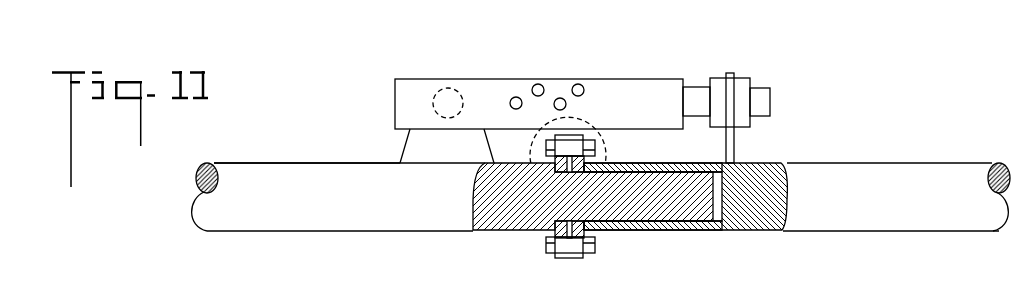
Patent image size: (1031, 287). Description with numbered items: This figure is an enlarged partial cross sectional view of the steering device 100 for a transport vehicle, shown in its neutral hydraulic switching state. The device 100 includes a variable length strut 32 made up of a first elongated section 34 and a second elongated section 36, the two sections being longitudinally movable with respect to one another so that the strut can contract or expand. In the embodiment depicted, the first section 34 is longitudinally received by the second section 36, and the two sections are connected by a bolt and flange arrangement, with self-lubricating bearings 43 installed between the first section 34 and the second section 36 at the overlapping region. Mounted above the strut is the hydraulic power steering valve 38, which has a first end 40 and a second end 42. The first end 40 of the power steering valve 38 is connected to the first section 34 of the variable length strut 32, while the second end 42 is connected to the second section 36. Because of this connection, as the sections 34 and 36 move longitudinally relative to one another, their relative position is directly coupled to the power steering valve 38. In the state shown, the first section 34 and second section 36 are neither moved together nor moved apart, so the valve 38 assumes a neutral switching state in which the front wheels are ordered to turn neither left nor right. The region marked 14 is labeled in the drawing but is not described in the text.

The coupling sleeve 14 is at (589, 118).
The variable length strut 32 is at (356, 151).
The first elongated section 34 is at (360, 207).
The second elongated section 36 is at (843, 210).
The hydraulic power steering valve 38 is at (501, 71).
The first end 40 is at (423, 107).
The second end 42 is at (733, 105).
The self-lubricating bearings 43 is at (631, 222).
The device 100 is at (871, 94).